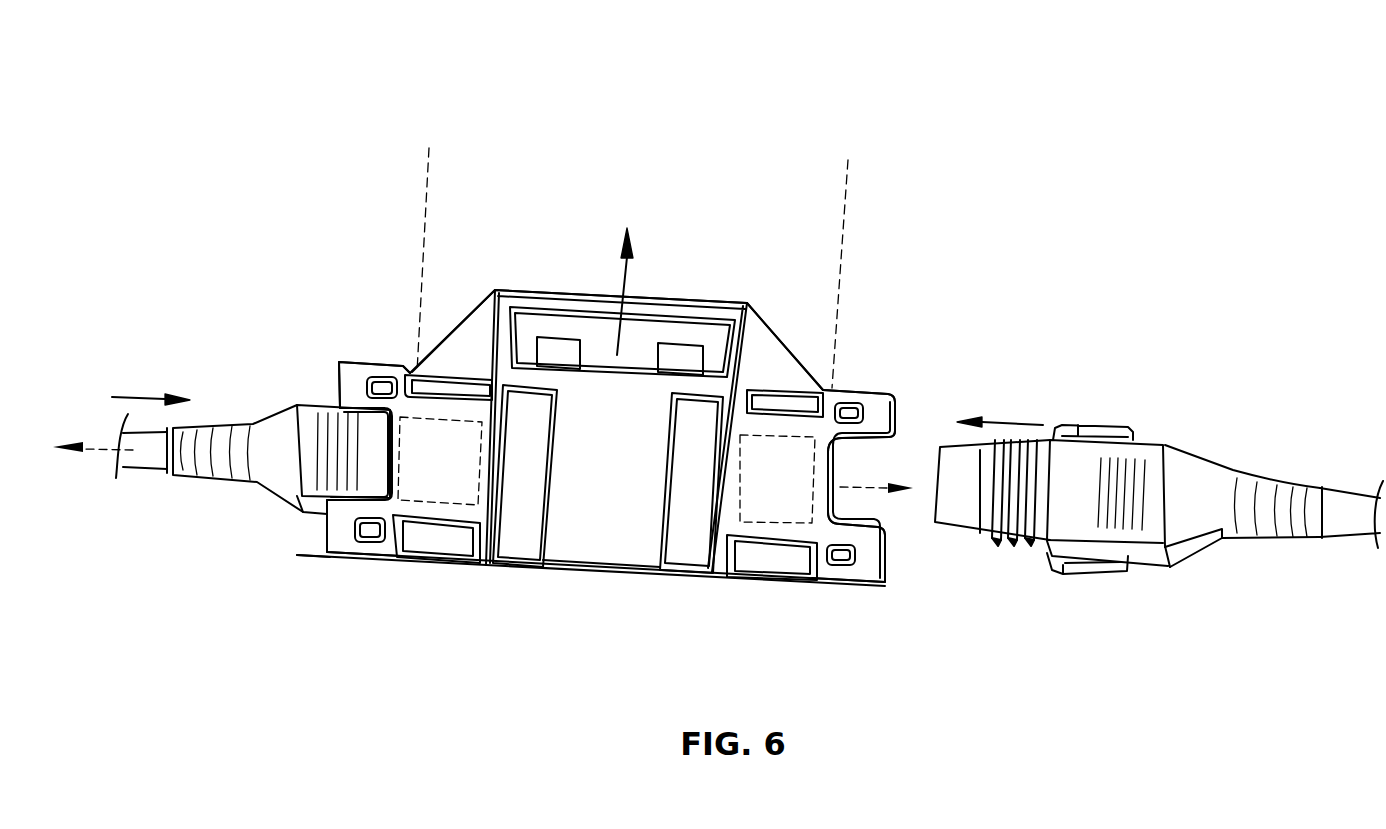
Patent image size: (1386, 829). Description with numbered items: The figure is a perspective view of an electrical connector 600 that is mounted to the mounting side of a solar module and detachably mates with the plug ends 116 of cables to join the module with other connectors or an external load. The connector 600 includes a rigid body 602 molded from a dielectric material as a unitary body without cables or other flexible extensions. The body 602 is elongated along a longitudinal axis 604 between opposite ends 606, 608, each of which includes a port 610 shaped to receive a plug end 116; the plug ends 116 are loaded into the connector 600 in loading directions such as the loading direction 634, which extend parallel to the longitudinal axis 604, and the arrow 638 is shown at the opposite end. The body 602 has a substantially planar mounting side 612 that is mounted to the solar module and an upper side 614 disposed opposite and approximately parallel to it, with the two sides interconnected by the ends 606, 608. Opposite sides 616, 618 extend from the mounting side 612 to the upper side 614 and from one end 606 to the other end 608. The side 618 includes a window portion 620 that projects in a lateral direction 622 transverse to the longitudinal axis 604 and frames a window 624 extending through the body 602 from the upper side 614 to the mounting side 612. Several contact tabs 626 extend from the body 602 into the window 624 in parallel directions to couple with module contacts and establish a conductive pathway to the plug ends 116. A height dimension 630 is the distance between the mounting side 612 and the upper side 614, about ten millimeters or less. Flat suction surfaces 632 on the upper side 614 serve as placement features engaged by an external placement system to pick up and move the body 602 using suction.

The electrical connector 600 is at (787, 360).
The rigid body 602 is at (585, 572).
The longitudinal axis 604 is at (873, 480).
The end 606 is at (883, 583).
The end 608 is at (330, 385).
The port 610 is at (315, 458).
The mounting side 612 is at (487, 572).
The upper side 614 is at (817, 558).
The side 616 is at (720, 580).
The side 618 is at (390, 362).
The window portion 620 is at (845, 153).
The lateral direction 622 is at (628, 277).
The window 624 is at (608, 340).
The contact tabs 626 is at (556, 348).
The height dimension 630 is at (317, 570).
The suction surfaces 632 is at (767, 507).
The loading direction 634 is at (135, 397).
The right connector insertion direction 638 is at (1008, 423).
The plug end 116 is at (1080, 458).